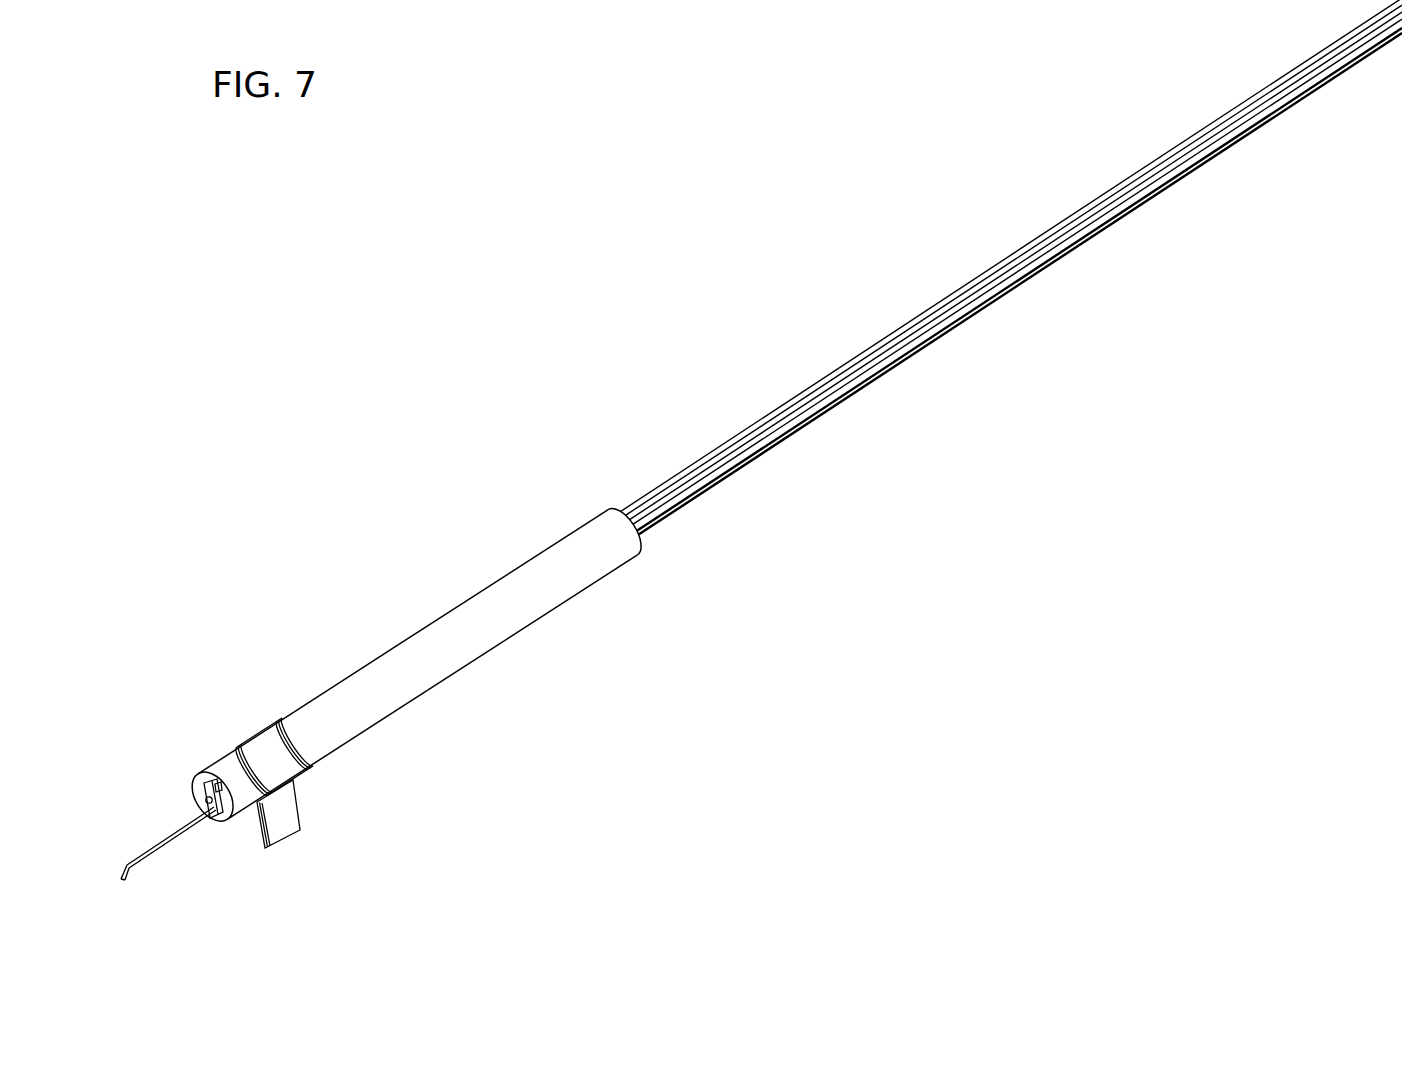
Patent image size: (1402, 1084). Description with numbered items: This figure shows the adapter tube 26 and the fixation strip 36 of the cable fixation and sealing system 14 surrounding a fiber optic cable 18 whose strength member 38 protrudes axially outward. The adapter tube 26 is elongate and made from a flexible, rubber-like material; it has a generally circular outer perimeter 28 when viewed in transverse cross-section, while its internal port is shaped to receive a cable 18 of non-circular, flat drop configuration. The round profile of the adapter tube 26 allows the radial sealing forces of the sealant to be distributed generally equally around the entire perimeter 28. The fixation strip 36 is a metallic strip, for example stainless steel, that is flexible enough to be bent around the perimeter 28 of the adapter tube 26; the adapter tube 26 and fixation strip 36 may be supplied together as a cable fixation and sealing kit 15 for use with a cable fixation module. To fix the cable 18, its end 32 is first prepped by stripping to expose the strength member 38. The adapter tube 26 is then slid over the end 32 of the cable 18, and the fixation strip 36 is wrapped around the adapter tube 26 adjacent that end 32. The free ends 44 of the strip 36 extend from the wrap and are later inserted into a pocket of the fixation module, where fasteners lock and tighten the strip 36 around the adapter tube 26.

The system 14 is at (418, 729).
The cable fixation and sealing kit 15 is at (323, 788).
The fiber optic cable 18 is at (797, 432).
The adapter tube 26 is at (416, 648).
The outer perimeter 28 is at (523, 562).
The end of the cable 32 is at (208, 789).
The fixation strip 36 is at (266, 745).
The strength member 38 is at (172, 833).
The free ends 44 is at (262, 845).